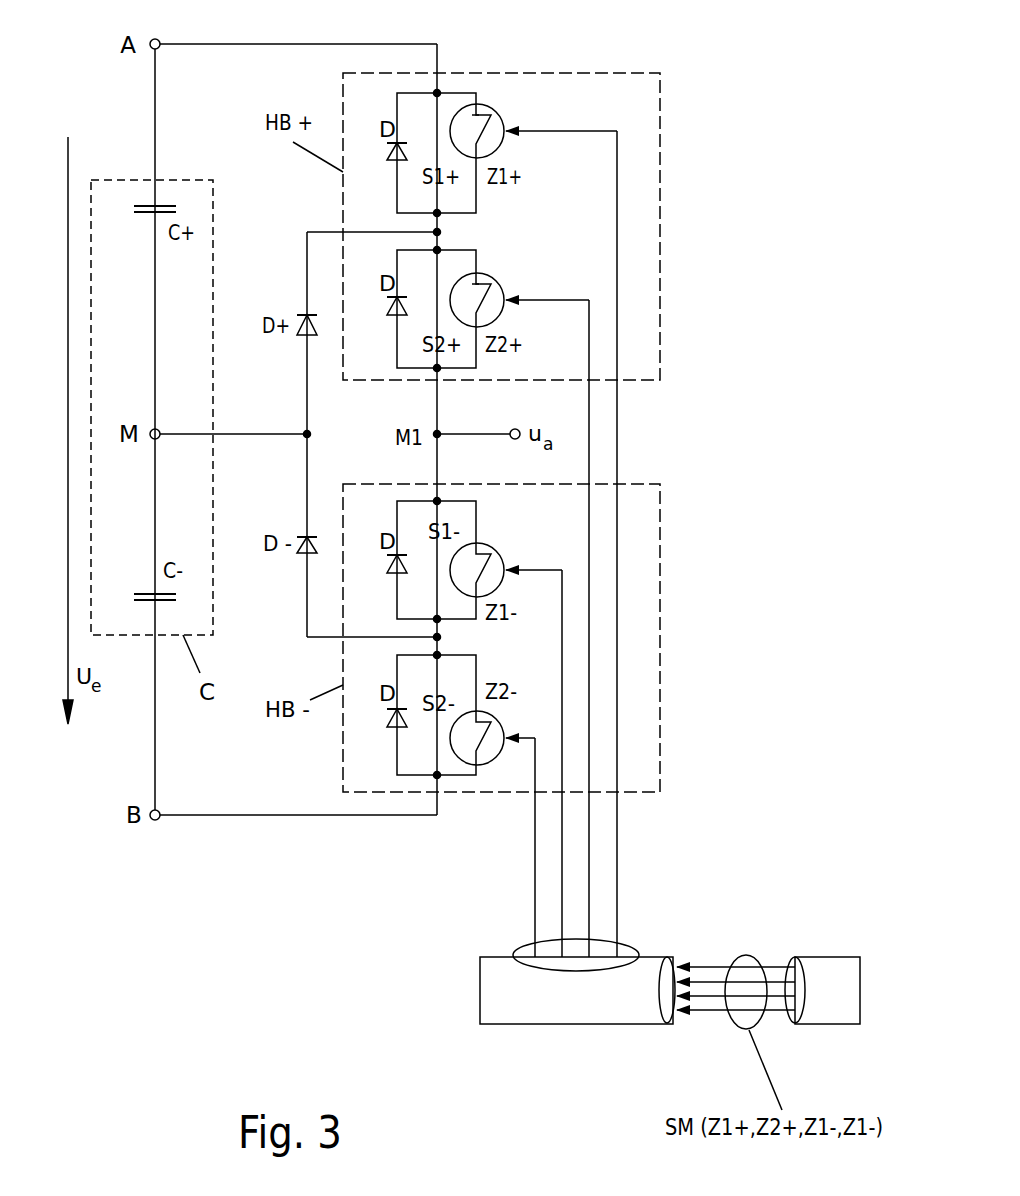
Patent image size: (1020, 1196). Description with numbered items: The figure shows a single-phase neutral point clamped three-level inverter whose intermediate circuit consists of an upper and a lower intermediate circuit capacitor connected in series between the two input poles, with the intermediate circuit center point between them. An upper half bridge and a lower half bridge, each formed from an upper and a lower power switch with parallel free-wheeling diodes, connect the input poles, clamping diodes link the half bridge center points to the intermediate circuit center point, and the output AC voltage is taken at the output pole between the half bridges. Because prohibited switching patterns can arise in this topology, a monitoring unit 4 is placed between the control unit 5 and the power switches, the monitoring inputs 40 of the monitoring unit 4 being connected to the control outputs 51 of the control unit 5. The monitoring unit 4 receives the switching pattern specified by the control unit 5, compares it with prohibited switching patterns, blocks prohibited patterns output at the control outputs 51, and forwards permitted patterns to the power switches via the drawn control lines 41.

The monitoring unit 4 is at (533, 1024).
The monitoring inputs 40 is at (675, 1013).
The control signal lines to switches 41 is at (632, 943).
The control unit 5 is at (822, 997).
The control outputs 51 is at (787, 978).